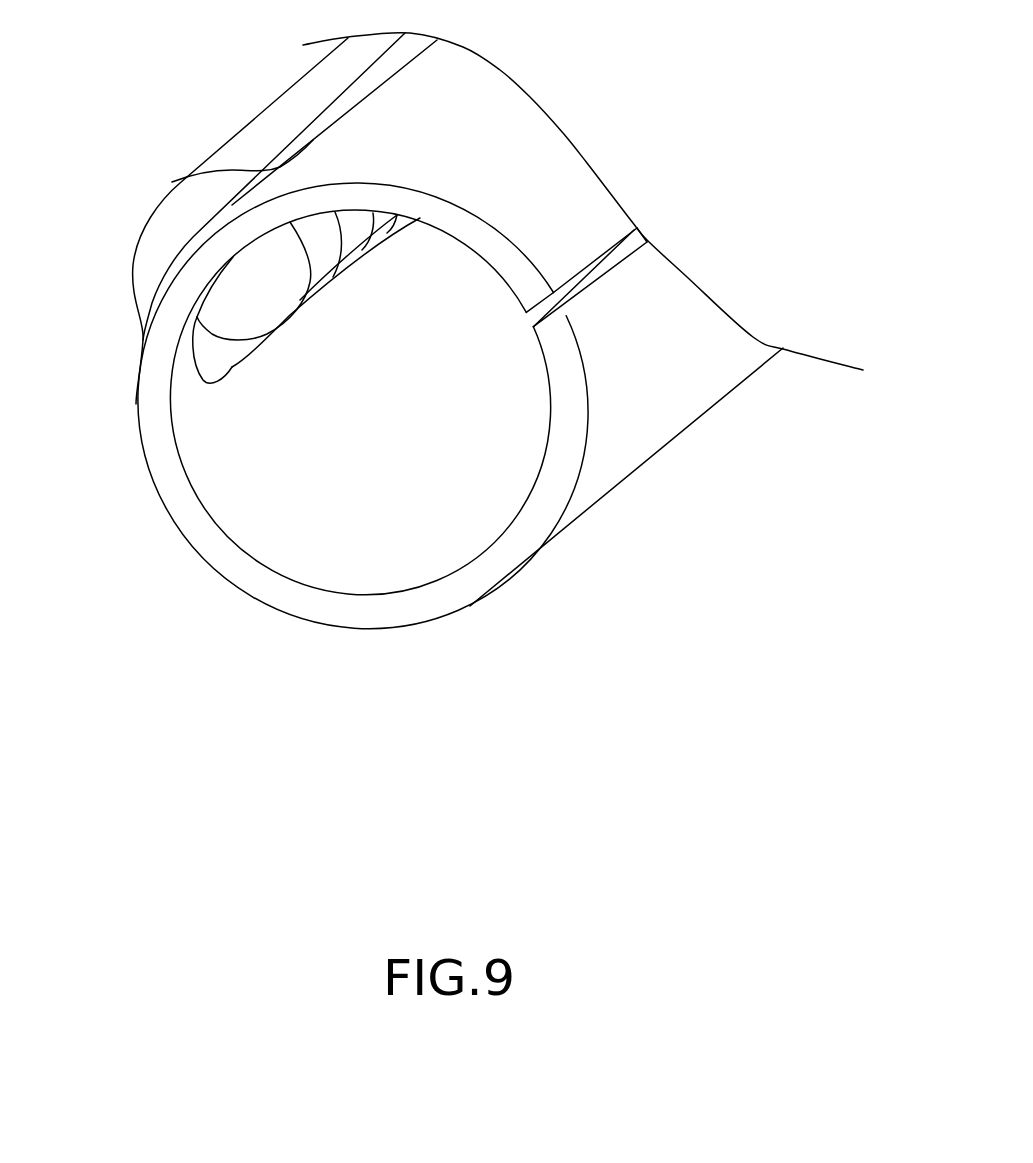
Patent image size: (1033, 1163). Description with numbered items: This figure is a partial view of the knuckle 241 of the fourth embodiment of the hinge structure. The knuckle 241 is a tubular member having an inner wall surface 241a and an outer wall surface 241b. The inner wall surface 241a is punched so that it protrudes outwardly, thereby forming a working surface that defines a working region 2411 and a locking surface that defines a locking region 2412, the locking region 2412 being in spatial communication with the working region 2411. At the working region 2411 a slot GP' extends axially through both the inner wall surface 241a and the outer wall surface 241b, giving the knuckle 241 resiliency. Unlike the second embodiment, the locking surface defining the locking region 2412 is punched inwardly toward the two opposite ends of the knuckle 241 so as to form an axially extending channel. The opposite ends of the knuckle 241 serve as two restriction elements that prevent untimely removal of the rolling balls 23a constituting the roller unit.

The knuckle 241 is at (442, 372).
The working region 2411 is at (555, 493).
The inner wall surface 241a is at (272, 555).
The outer wall surface 241b is at (402, 627).
The locking region 2412 is at (197, 317).
The rolling balls 23a is at (223, 316).
The slot GP' is at (620, 199).